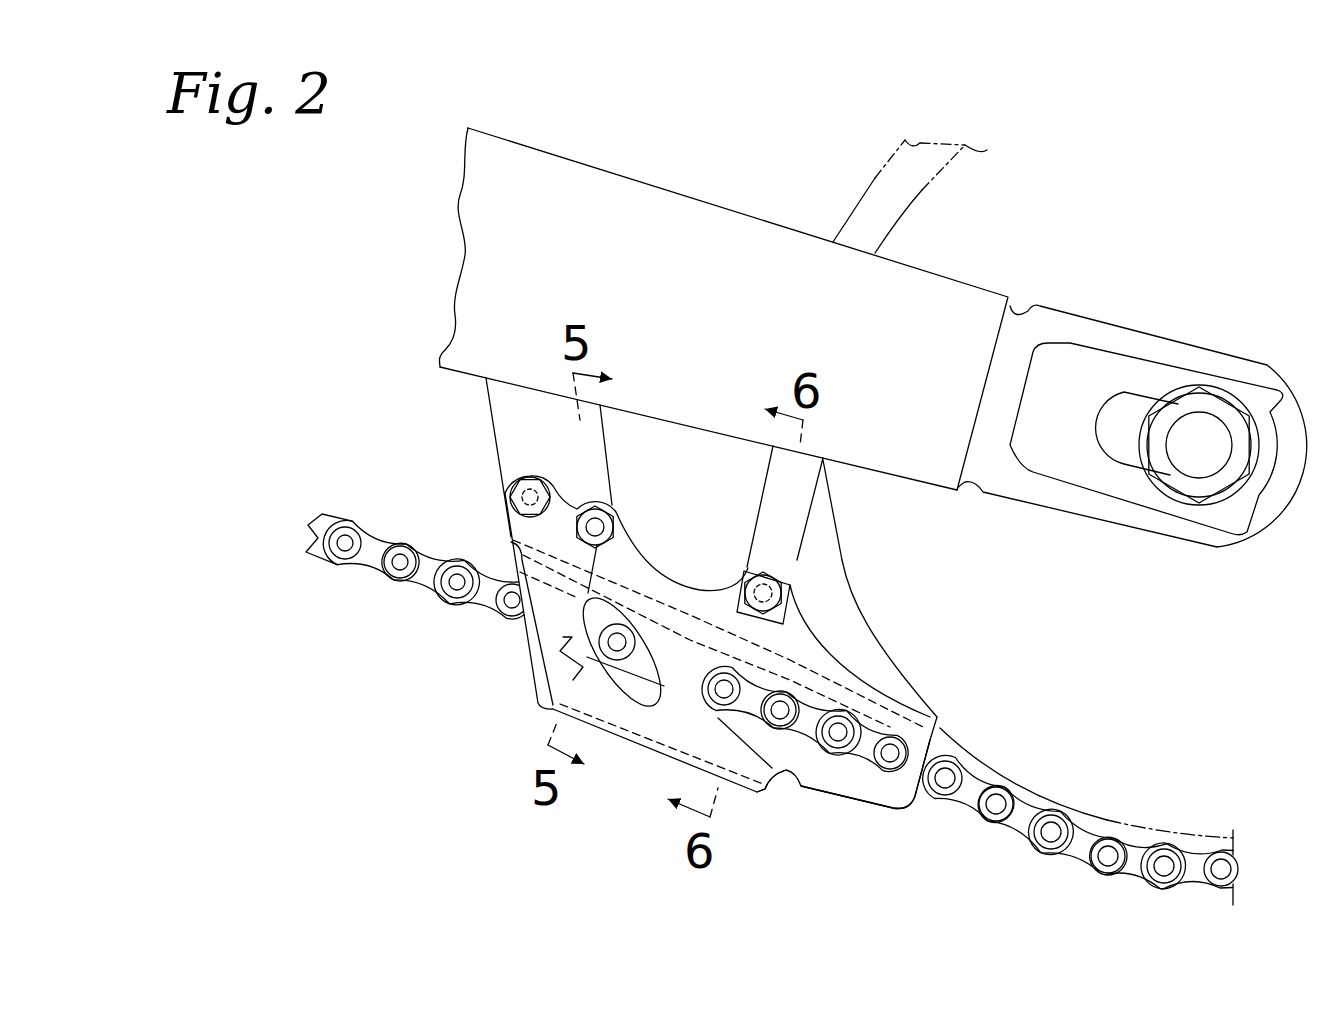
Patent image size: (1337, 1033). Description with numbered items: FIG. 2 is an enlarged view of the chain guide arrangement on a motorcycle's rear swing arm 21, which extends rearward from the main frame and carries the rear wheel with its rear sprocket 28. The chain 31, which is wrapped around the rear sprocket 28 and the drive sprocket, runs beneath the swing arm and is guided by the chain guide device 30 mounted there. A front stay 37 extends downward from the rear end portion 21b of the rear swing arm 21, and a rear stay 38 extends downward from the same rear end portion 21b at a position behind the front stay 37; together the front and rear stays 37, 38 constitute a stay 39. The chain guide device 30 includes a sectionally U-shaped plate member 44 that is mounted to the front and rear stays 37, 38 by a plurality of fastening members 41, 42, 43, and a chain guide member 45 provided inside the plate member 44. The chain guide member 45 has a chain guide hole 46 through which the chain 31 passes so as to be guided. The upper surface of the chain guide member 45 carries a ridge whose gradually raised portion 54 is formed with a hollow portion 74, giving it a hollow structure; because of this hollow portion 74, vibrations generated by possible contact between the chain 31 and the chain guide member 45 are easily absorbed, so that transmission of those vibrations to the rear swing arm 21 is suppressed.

The rear swing arm 21 is at (872, 295).
The rear end portion 21b is at (658, 217).
The stay 39 is at (655, 387).
The front stay 37 is at (510, 425).
The rear stay 38 is at (802, 497).
The fastening member 41 is at (506, 495).
The fastening member 42 is at (620, 509).
The fastening member 43 is at (799, 567).
The gradually raised portion 54 is at (627, 552).
The hollow portion 74 is at (600, 573).
The chain guide device 30 is at (662, 665).
The chain 31 is at (441, 616).
The chain guide hole 46 is at (563, 635).
The chain guide member 45 is at (800, 777).
The plate member 44 is at (865, 790).
The rear sprocket 28 is at (772, 721).